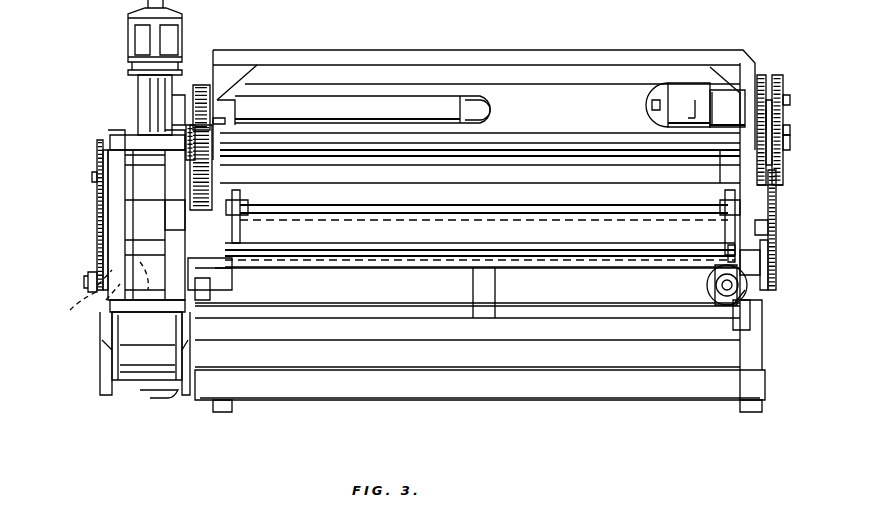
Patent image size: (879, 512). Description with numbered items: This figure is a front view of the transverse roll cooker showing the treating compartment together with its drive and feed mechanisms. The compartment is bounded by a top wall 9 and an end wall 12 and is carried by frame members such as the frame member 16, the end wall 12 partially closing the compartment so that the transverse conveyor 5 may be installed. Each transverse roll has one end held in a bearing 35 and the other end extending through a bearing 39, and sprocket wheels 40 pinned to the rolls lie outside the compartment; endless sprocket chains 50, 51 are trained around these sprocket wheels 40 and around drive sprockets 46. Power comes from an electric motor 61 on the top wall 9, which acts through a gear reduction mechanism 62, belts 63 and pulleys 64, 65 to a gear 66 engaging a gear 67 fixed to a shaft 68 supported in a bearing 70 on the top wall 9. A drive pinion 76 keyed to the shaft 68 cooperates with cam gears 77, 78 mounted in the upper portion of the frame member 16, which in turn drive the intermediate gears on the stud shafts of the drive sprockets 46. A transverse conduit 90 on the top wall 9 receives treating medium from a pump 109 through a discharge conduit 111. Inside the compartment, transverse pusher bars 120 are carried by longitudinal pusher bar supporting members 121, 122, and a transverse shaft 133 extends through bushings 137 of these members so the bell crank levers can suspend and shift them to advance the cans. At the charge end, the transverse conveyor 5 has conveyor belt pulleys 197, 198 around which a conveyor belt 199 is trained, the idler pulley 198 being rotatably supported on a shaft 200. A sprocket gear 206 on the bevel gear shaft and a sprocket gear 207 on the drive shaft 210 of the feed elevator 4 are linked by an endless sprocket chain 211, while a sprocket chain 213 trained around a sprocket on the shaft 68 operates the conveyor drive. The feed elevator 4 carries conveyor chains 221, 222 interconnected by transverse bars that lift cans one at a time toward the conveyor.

The feed elevator 4 is at (125, 245).
The transverse conveyor 5 is at (700, 322).
The top wall 9 is at (531, 150).
The end wall 12 is at (636, 362).
The frame member 16 is at (547, 48).
The bearing 35 is at (760, 262).
The bearing 39 is at (222, 272).
The sprocket wheel 40 is at (778, 271).
The drive sprocket 46 is at (776, 216).
The endless sprocket chain 50 is at (190, 218).
The endless sprocket chain 51 is at (776, 232).
The electric motor 61 is at (690, 82).
The gear reduction mechanism 62 is at (736, 107).
The belt 63 is at (770, 116).
The pulley 64 is at (788, 100).
The pulley 65 is at (786, 128).
The gear 66 is at (800, 140).
The gear 67 is at (778, 185).
The shaft 68 is at (601, 132).
The bearing 70 is at (238, 118).
The drive pinion 76 is at (207, 130).
The cam gear 77 is at (784, 68).
The cam gear 78 is at (204, 85).
The transverse conduit 90 is at (535, 106).
The pump 109 is at (138, 88).
The discharge conduit 111 is at (378, 110).
The pusher bar 120 is at (545, 239).
The pusher bar supporting member 121 is at (240, 242).
The pusher bar supporting member 122 is at (728, 238).
The transverse shaft 133 is at (570, 202).
The bushing 137 is at (242, 205).
The conveyor belt pulley 197 is at (96, 294).
The conveyor belt pulley 198 is at (705, 284).
The conveyor belt 199 is at (370, 302).
The shaft 200 is at (760, 296).
The sprocket gear 206 is at (90, 276).
The sprocket gear 207 is at (95, 168).
The drive shaft 210 is at (92, 177).
The endless sprocket chain 211 is at (97, 204).
The sprocket chain 213 is at (192, 168).
The conveyor chain 221 is at (118, 376).
The conveyor chain 222 is at (178, 385).